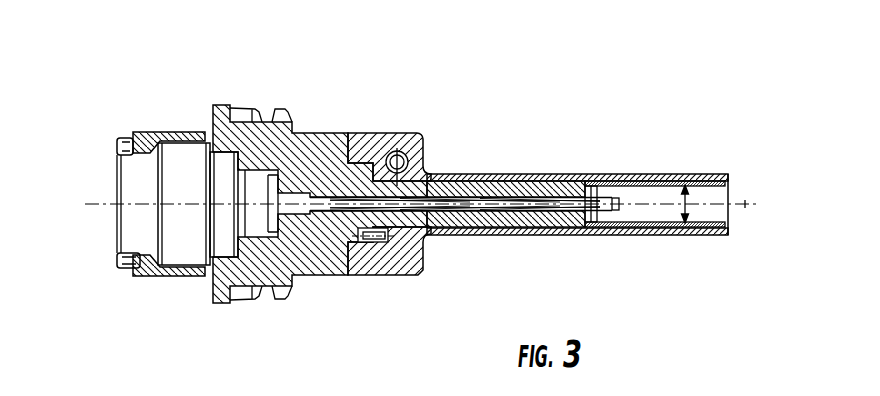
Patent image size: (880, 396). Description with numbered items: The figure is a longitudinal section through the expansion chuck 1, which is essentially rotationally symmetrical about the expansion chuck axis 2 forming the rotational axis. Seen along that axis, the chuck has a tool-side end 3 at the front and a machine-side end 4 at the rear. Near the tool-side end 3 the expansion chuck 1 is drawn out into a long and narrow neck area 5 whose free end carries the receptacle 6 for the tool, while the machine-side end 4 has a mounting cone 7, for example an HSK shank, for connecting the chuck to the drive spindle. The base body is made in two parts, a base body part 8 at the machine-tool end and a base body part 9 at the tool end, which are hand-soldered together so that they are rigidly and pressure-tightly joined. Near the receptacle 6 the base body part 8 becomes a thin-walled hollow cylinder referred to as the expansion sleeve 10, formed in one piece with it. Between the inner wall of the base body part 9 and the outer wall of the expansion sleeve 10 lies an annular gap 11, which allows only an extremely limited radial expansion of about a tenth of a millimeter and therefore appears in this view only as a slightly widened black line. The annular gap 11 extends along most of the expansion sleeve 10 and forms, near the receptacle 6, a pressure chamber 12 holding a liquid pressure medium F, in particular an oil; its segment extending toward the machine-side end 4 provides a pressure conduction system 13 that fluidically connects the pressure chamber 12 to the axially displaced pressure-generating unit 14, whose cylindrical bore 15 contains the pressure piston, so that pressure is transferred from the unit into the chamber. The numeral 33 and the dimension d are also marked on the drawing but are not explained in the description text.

The expansion chuck 1 is at (615, 68).
The expansion chuck axis 2 is at (745, 204).
The tool-side end 3 is at (768, 222).
The machine-side end 4 is at (60, 181).
The neck area 5 is at (592, 240).
The receptacle 6 is at (715, 212).
The mounting cone 7 is at (155, 132).
The base body part 8 is at (308, 275).
The base body part 9 is at (423, 260).
The expansion sleeve 10 is at (664, 189).
The annular gap 11 is at (500, 182).
The pressure chamber 12 is at (648, 228).
The pressure conduction system 13 is at (543, 230).
The pressure-generating unit 14 is at (412, 155).
The cylindrical bore 15 is at (395, 158).
The clamping cylinder 33 is at (192, 213).
The bore diameter d is at (690, 198).
The pressure medium F is at (692, 226).